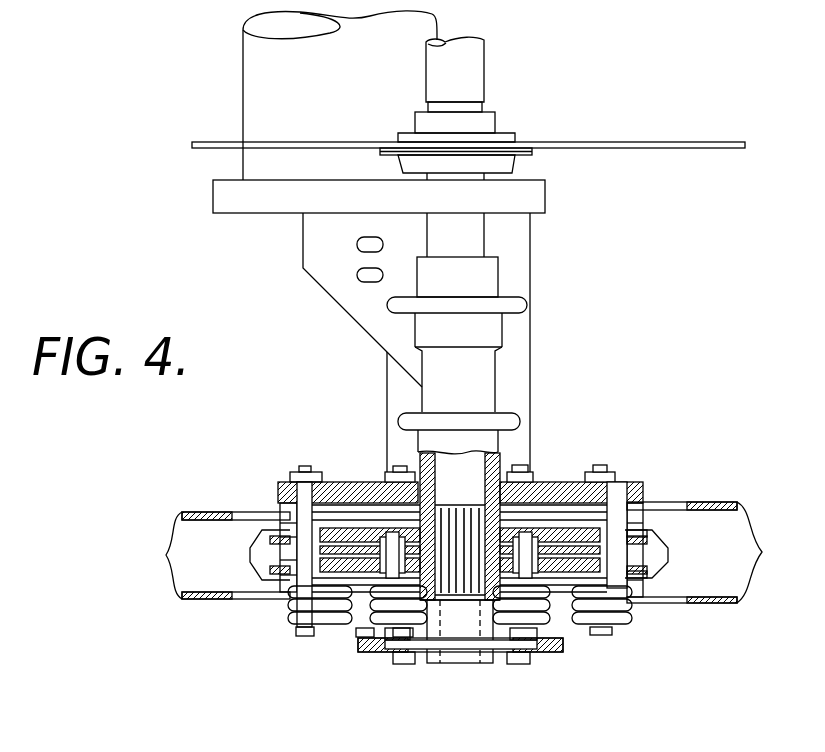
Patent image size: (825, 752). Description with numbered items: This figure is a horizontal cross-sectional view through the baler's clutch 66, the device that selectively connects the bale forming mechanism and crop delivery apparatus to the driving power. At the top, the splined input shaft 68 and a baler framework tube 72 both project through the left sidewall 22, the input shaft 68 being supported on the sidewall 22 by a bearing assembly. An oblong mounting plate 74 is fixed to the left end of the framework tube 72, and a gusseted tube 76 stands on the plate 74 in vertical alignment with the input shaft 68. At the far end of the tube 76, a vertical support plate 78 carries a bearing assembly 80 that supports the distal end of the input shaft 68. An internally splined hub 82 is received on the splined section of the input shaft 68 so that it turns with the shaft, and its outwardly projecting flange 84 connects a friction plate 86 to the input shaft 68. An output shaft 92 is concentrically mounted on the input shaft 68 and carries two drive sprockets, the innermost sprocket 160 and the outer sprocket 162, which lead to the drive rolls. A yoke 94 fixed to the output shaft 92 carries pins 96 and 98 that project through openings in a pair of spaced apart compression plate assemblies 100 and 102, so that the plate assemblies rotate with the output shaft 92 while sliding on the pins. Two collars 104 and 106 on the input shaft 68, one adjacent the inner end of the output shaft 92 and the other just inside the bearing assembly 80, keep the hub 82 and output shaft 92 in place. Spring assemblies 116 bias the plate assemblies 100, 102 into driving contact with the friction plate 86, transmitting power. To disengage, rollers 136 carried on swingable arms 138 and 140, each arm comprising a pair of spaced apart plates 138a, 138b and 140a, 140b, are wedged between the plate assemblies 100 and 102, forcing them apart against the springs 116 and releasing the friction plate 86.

The left sidewall 22 is at (702, 142).
The clutch 66 is at (620, 640).
The input shaft 68 is at (488, 60).
The framework tube 72 is at (258, 50).
The mounting plate 74 is at (222, 203).
The gusseted tube 76 is at (540, 230).
The support plate 78 is at (553, 653).
The bearing assembly 80 is at (428, 654).
The hub 82 is at (516, 500).
The flange 84 is at (366, 592).
The friction plate 86 is at (366, 592).
The output shaft 92 is at (488, 378).
The yoke 94 is at (640, 483).
The pin 96 is at (301, 481).
The pin 98 is at (617, 482).
The compression plate assembly 100 is at (648, 533).
The compression plate assembly 102 is at (648, 573).
The collar 104 is at (485, 272).
The collar 106 is at (473, 616).
The spring assemblies 116 is at (293, 627).
The rollers 136 is at (262, 553).
The swingable arm 138 is at (151, 555).
The plate 138a is at (210, 512).
The plate 138b is at (213, 600).
The swingable arm 140 is at (780, 552).
The plate 140a is at (718, 501).
The plate 140b is at (720, 604).
The drive sprocket 160 is at (524, 306).
The drive sprocket 162 is at (410, 422).